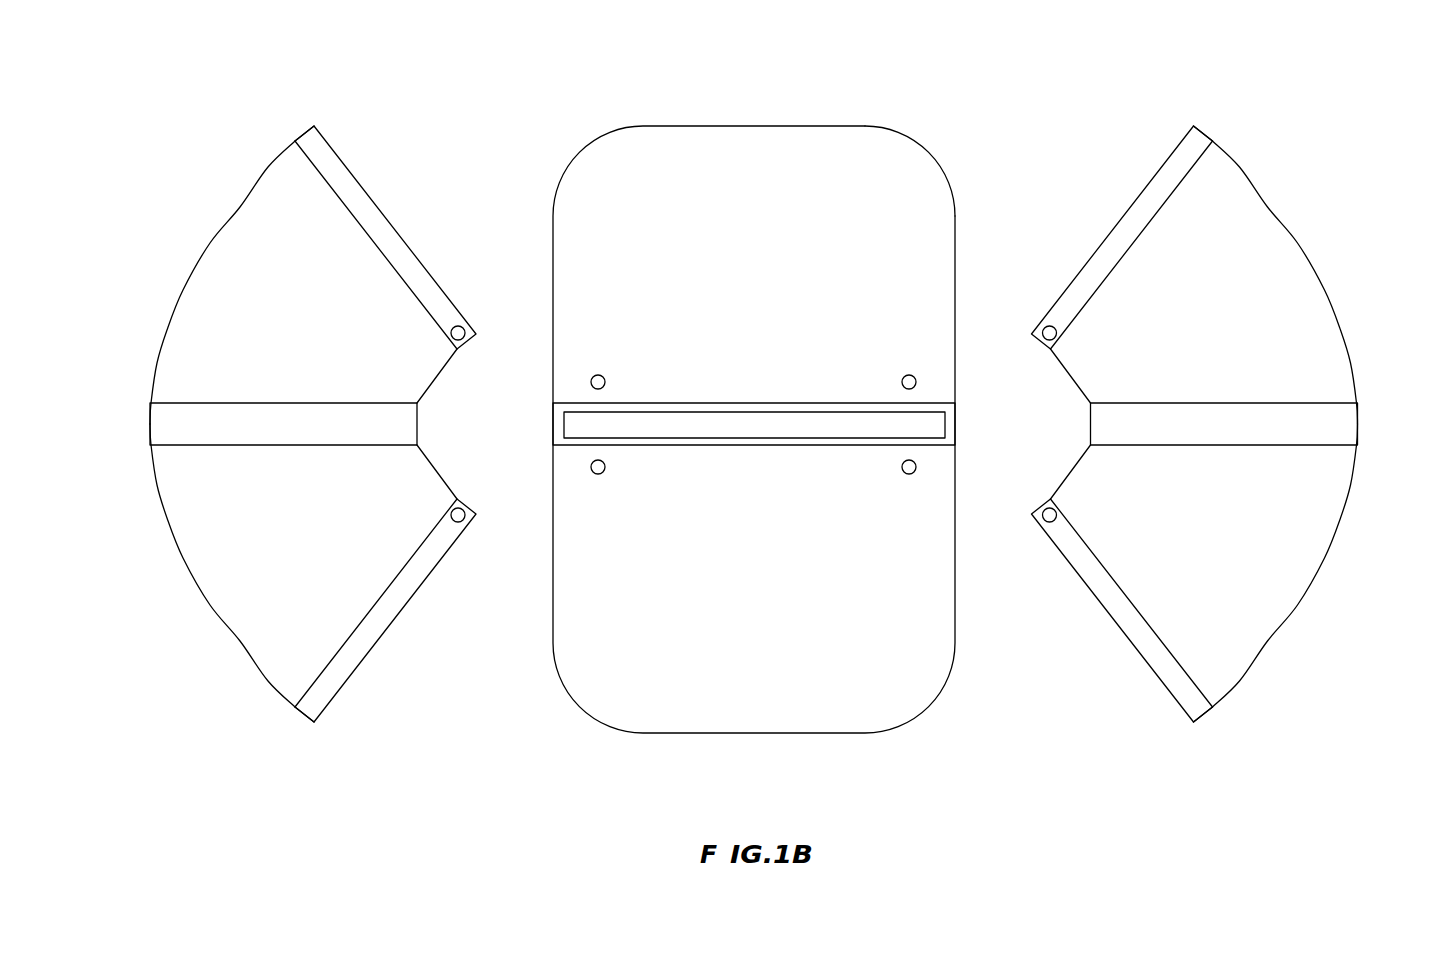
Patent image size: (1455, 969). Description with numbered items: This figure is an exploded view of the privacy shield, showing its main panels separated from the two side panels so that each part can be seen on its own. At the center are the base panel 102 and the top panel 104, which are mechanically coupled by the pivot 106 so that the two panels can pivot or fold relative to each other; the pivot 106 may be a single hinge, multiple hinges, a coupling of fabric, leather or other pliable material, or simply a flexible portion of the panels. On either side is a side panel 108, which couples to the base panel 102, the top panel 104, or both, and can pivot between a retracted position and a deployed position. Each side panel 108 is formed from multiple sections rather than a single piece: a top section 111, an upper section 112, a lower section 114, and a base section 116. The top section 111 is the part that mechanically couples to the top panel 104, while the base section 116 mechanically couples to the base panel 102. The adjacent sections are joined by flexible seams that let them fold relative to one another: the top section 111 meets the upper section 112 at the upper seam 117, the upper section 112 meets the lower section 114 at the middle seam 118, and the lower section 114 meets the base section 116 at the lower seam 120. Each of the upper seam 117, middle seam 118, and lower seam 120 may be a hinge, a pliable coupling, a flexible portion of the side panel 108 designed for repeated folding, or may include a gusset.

The base panel 102 is at (912, 678).
The top panel 104 is at (898, 170).
The pivot 106 is at (958, 415).
The side panel 108 is at (1183, 755).
The top section 111 is at (308, 139).
The upper section 112 is at (220, 253).
The lower section 114 is at (220, 593).
The base section 116 is at (310, 703).
The upper seam 117 is at (310, 167).
The middle seam 118 is at (165, 422).
The lower seam 120 is at (313, 676).